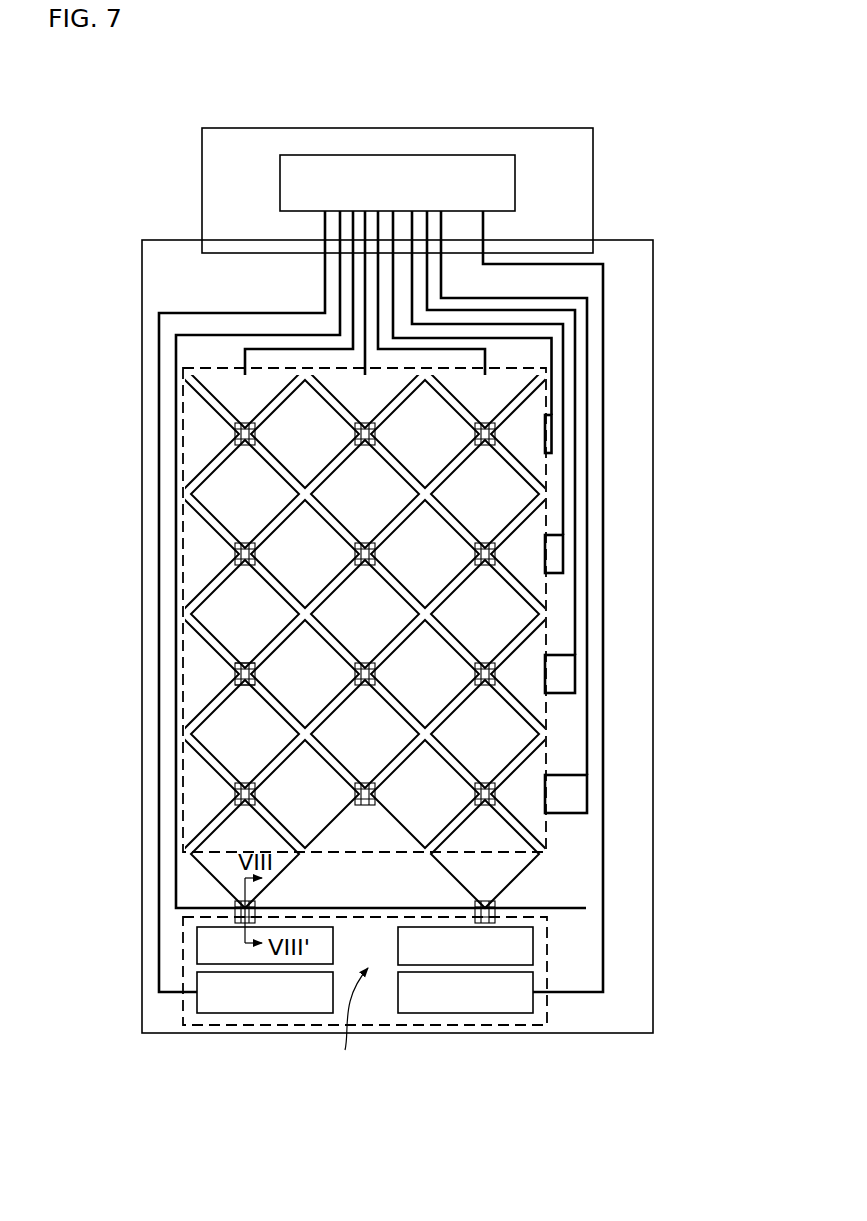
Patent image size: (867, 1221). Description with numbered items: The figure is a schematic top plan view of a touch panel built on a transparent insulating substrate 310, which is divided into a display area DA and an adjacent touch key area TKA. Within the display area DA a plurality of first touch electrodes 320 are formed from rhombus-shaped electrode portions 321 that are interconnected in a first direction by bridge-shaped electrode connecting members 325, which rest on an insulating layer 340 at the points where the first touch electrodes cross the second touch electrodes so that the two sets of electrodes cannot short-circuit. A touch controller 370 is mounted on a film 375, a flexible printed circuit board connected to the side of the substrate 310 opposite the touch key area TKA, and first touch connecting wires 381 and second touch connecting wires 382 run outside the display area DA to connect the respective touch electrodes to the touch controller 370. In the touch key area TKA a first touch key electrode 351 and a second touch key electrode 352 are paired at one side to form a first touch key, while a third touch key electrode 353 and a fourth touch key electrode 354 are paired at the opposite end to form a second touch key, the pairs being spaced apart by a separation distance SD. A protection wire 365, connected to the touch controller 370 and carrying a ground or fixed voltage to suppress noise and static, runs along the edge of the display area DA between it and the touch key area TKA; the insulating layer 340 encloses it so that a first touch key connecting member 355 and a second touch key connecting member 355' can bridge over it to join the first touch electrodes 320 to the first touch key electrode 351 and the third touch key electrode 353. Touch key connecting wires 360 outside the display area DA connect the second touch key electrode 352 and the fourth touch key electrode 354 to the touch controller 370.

The substrate 310 is at (142, 264).
The first touch electrode 320 is at (279, 562).
The rhombus-shaped electrode portion 321 is at (218, 502).
The electrode connecting member 325 is at (245, 662).
The insulating layer 340 is at (234, 686).
The first touch key electrode 351 is at (197, 960).
The second touch key electrode 352 is at (197, 1007).
The third touch key electrode 353 is at (533, 957).
The fourth touch key electrode 354 is at (533, 1005).
The first touch key connecting member 355 is at (190, 854).
The second touch key connecting member 355' is at (574, 854).
The touch key connecting wire 360 is at (158, 783).
The protection wire 365 is at (176, 723).
The touch controller 370 is at (281, 168).
The film 375 is at (202, 200).
The first touch connecting wire 381 is at (375, 268).
The second touch connecting wire 382 is at (553, 335).
The display area DA is at (547, 637).
The touch key area TKA is at (547, 937).
The separation distance SD is at (349, 1024).